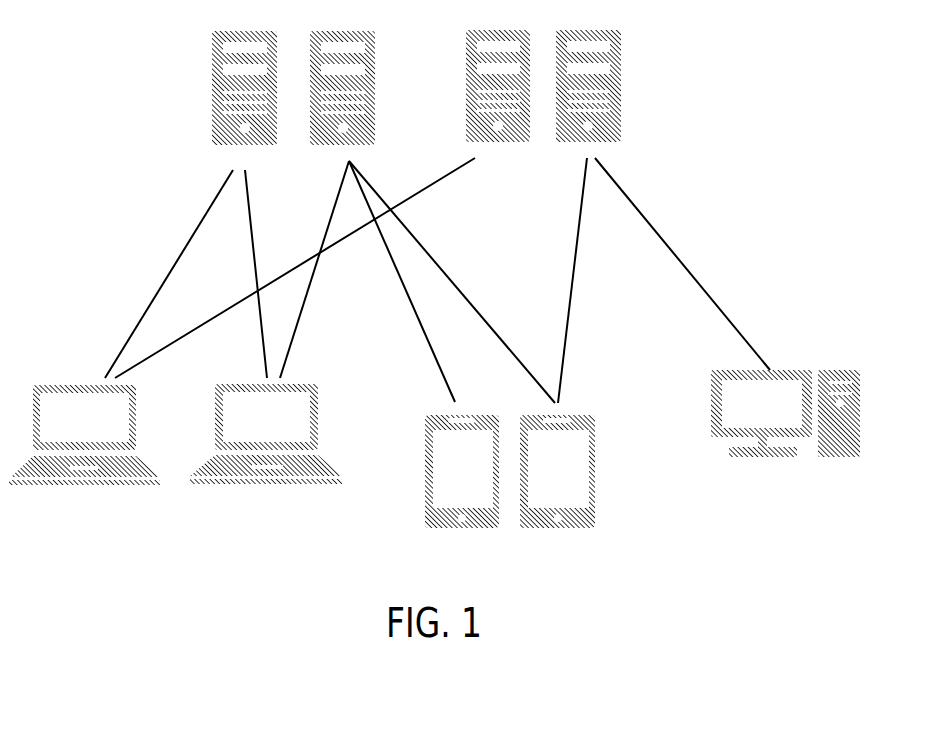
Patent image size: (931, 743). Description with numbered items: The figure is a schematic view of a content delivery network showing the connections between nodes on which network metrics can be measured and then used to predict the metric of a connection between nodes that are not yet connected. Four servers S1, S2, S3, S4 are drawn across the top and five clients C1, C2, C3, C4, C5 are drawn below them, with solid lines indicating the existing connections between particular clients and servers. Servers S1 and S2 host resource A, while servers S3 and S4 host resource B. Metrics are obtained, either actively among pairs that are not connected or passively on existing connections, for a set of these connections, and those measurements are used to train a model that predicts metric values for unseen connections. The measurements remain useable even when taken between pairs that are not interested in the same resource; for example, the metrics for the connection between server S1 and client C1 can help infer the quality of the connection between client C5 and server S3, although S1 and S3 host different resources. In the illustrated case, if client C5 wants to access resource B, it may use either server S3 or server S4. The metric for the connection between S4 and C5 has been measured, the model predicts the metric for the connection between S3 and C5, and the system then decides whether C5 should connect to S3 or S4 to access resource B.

The server S1 is at (244, 73).
The server S2 is at (342, 73).
The server S3 is at (498, 71).
The server S4 is at (588, 71).
The client C1 is at (84, 457).
The client C2 is at (266, 455).
The client C3 is at (462, 492).
The client C4 is at (557, 492).
The client C5 is at (785, 434).